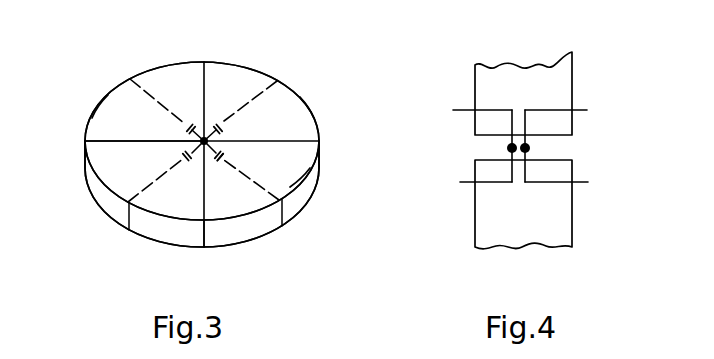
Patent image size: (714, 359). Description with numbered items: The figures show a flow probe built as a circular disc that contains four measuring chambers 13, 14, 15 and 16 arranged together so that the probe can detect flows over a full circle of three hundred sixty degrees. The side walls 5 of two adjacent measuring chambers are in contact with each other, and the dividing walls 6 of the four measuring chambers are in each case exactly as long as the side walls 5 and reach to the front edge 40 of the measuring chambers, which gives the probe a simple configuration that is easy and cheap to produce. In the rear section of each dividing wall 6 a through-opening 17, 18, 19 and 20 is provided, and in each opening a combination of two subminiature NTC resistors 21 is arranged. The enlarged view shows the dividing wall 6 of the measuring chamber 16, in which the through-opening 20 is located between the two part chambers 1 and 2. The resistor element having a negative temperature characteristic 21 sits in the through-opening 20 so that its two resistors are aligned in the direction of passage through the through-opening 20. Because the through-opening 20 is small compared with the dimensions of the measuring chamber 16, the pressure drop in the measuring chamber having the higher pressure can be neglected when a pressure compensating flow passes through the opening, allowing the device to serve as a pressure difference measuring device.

In FIG. 3, the part chamber 1 is at (219, 200).
In FIG. 3, the part chamber 2 is at (303, 157).
In FIG. 3, the side walls 5 is at (207, 86).
In FIG. 3, the dividing walls 6 is at (143, 90).
In FIG. 4, the dividing walls 6 is at (547, 93).
In FIG. 3, the measuring chamber 13 is at (308, 103).
In FIG. 3, the measuring chamber 14 is at (99, 99).
In FIG. 3, the measuring chamber 15 is at (95, 205).
In FIG. 3, the measuring chamber 16 is at (305, 196).
In FIG. 3, the through-opening 17 is at (227, 125).
In FIG. 3, the through-opening 18 is at (195, 122).
In FIG. 3, the through-opening 19 is at (193, 165).
In FIG. 3, the through-opening 20 is at (223, 165).
In FIG. 4, the through-opening 20 is at (548, 148).
In FIG. 3, the subminiature NTC resistors 21 is at (229, 151).
In FIG. 4, the subminiature NTC resistors 21 is at (505, 147).
In FIG. 3, the front edge 40 is at (86, 130).